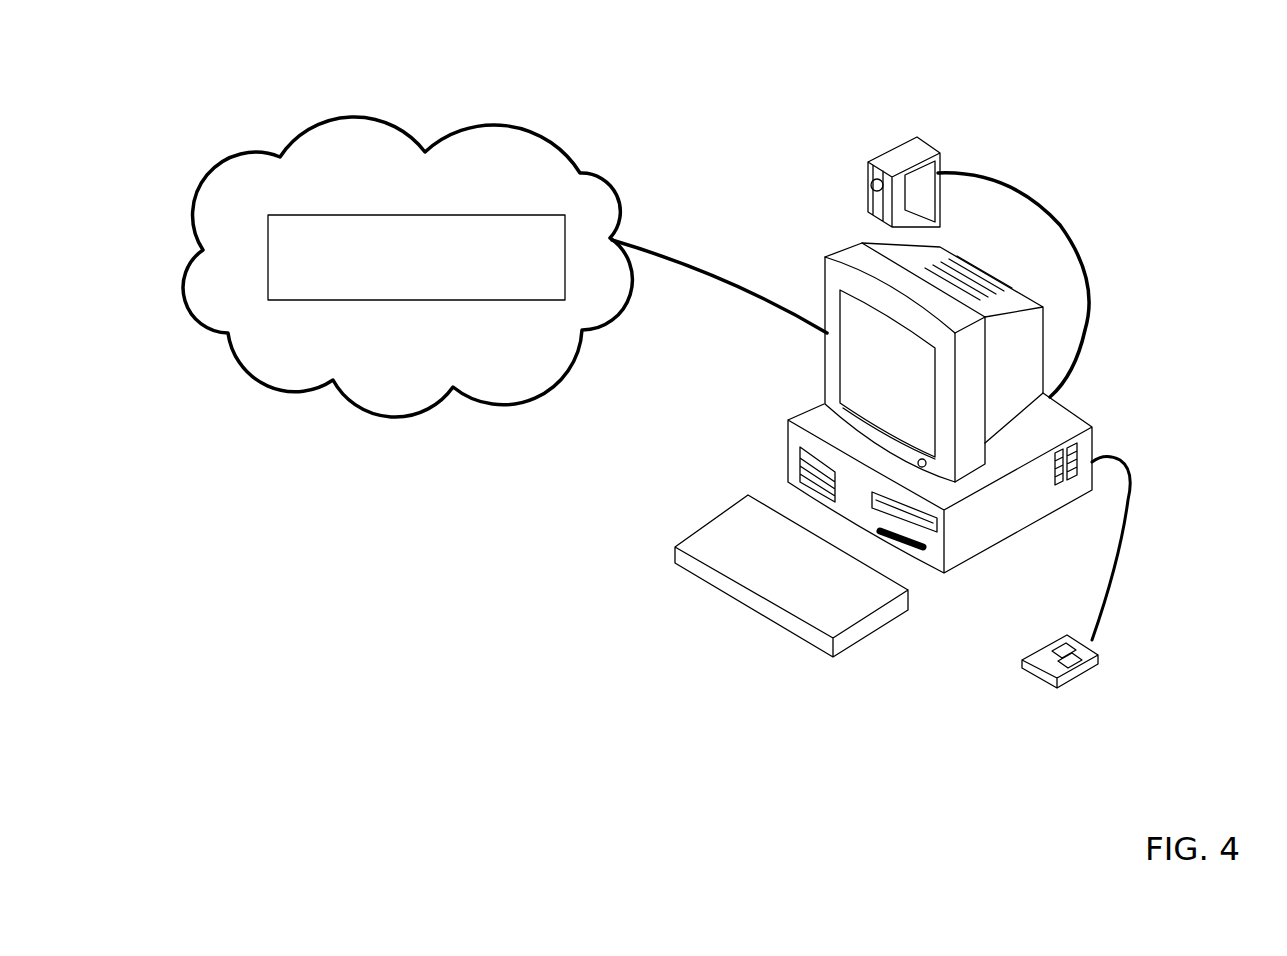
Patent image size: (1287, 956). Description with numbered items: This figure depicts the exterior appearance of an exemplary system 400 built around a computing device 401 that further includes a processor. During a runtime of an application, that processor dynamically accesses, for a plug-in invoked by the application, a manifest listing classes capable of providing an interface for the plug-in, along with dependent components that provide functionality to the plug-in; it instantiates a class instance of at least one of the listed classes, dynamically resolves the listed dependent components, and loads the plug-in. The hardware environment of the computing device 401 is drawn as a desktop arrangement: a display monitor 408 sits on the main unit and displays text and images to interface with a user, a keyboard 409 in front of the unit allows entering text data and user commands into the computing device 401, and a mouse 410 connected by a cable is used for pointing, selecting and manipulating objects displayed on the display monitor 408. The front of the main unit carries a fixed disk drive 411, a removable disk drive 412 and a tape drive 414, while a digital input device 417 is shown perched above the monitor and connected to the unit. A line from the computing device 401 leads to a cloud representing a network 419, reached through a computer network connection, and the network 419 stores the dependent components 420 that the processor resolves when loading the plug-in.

The computing environment 400 is at (665, 804).
The computing device 401 is at (1014, 88).
The display monitor 408 is at (847, 248).
The keyboard 409 is at (693, 542).
The mouse 410 is at (1095, 663).
The fixed disk drive 411 is at (803, 462).
The removable disk drive 412 is at (942, 533).
The tape drive 414 is at (912, 551).
The digital input device 417 is at (942, 197).
The network 419 is at (280, 157).
The dependent components 420 is at (413, 215).